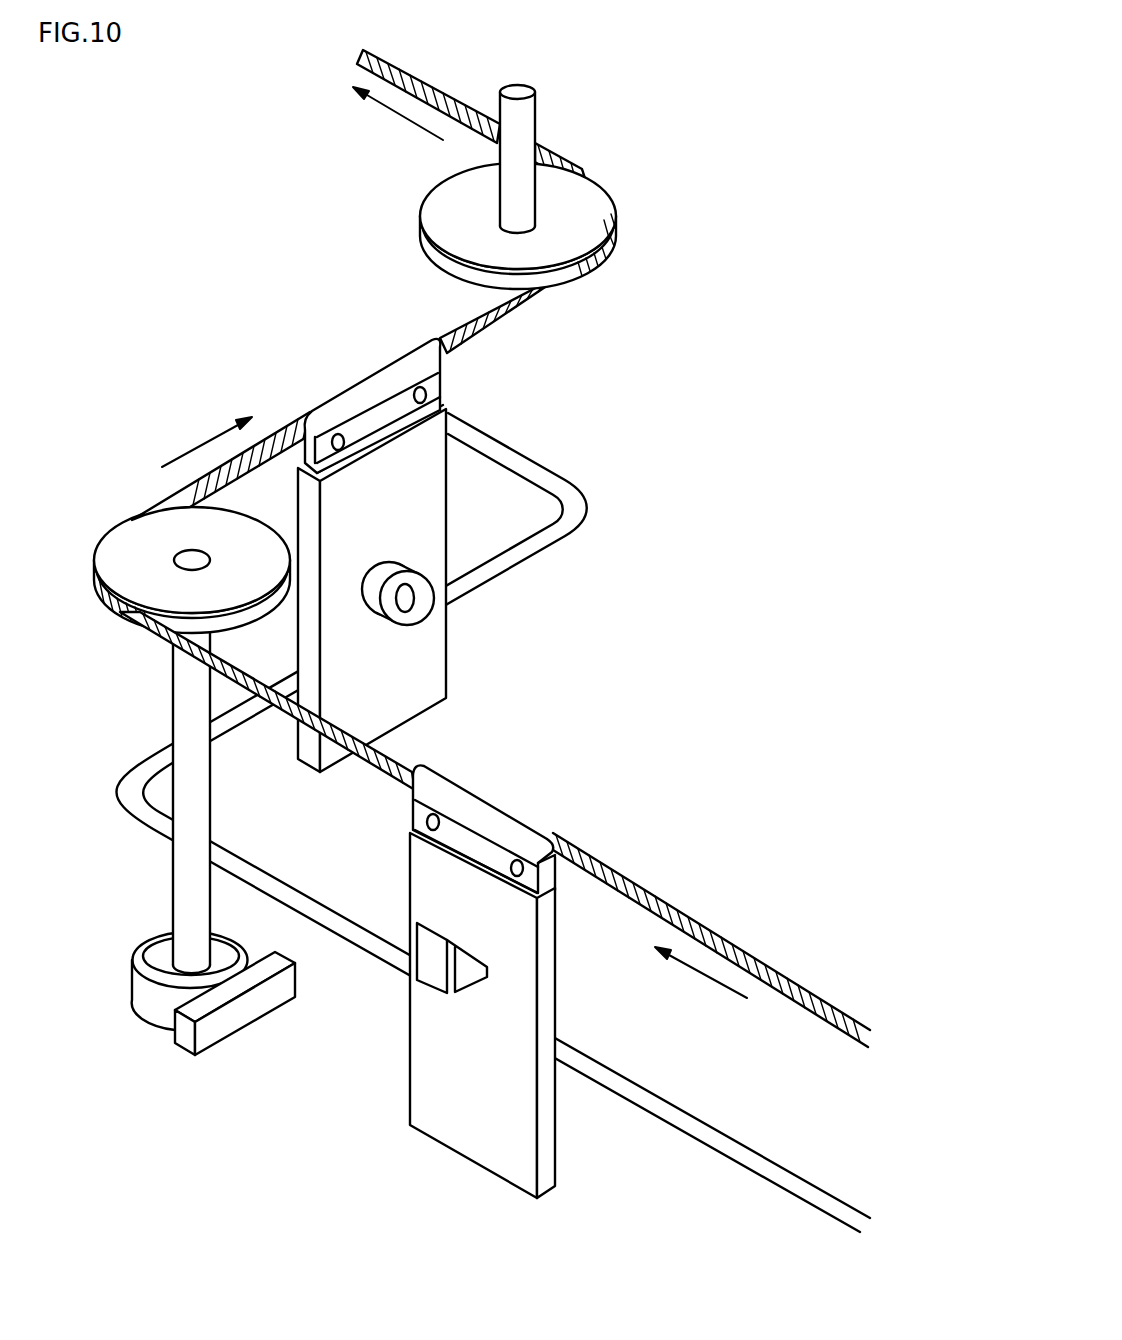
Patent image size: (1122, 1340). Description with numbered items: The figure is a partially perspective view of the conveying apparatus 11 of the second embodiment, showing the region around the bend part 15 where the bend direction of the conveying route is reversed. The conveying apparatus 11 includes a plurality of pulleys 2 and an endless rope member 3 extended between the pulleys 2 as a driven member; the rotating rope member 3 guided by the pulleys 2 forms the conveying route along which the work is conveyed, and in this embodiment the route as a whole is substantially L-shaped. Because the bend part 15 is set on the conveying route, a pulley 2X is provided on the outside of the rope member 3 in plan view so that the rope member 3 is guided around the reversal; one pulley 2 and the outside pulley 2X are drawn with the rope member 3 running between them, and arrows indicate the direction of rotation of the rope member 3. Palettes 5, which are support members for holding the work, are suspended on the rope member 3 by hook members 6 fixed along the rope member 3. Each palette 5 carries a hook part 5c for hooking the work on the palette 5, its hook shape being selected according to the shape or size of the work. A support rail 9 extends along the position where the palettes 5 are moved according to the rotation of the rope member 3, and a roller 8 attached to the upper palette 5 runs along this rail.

The pulley 2 is at (96, 526).
The pulley 2X is at (637, 200).
The rope member 3 is at (646, 900).
The palette 5 is at (456, 657).
The hook part 5c is at (432, 926).
The hook member 6 is at (365, 375).
The roller 8 is at (420, 583).
The support rail 9 is at (727, 1143).
The conveying apparatus 11 is at (768, 421).
The bend part 15 is at (305, 262).